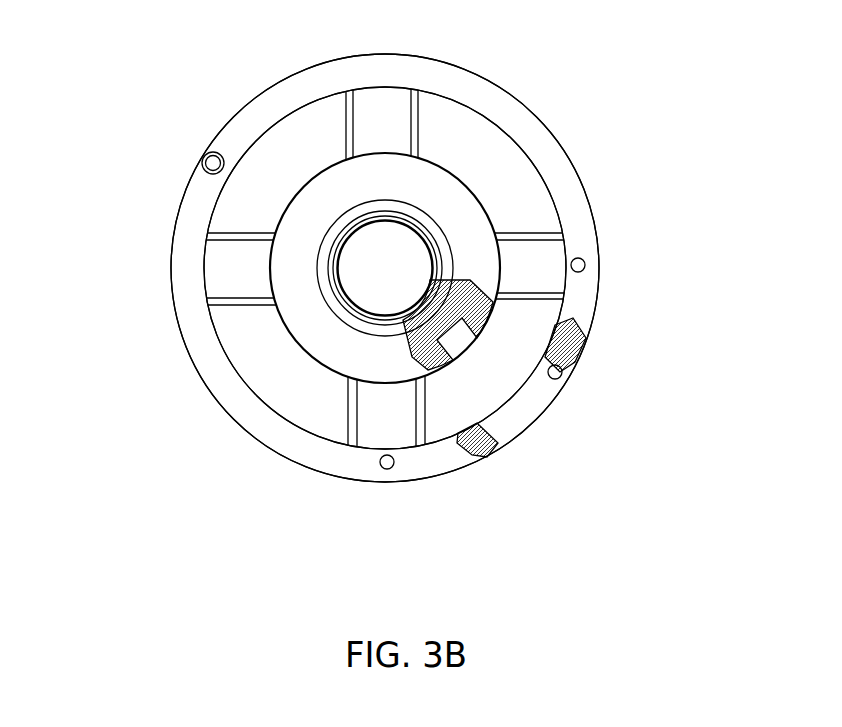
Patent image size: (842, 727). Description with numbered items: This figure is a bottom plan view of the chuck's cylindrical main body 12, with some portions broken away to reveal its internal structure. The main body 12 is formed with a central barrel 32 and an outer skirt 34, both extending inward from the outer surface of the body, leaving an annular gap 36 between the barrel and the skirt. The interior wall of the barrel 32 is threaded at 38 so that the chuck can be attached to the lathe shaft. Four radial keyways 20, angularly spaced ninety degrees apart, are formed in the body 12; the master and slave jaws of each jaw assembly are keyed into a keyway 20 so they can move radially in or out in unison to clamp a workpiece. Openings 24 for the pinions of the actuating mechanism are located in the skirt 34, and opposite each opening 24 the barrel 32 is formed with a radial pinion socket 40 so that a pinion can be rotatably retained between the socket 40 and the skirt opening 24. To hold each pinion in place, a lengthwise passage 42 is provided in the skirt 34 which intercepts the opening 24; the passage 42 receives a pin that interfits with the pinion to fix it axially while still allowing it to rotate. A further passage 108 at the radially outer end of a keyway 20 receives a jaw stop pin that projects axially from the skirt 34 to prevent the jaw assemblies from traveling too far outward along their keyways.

The main body 12 is at (213, 88).
The radial keyway 20 is at (378, 108).
The opening 24 is at (520, 412).
The central barrel 32 is at (318, 330).
The outer skirt 34 is at (203, 333).
The annular gap 36 is at (252, 348).
The threaded interior wall 38 is at (430, 250).
The radial pinion socket 40 is at (460, 345).
The lengthwise passage 42 is at (207, 153).
The passage 108 is at (586, 266).